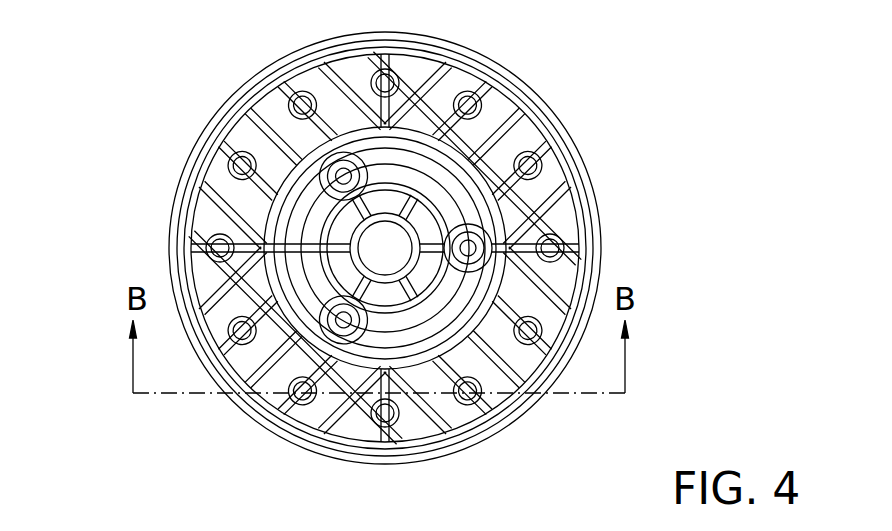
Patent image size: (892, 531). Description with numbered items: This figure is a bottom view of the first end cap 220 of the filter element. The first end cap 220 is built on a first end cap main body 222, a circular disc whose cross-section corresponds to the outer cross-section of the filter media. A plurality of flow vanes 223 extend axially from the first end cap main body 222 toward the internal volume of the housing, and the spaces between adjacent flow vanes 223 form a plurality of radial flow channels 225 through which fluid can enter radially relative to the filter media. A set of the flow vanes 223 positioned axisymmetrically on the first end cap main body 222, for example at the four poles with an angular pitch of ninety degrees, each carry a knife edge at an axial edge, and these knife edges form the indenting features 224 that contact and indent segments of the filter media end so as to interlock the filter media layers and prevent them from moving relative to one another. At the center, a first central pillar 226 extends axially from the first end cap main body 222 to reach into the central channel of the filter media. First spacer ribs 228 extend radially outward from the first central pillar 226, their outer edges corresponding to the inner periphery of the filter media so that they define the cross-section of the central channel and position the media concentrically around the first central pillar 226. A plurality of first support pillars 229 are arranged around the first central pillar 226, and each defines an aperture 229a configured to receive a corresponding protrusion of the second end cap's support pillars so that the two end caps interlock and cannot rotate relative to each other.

The first end cap 220 is at (676, 118).
The first end cap main body 222 is at (558, 218).
The flow vanes 223 is at (452, 176).
The indenting features 224 is at (393, 82).
The radial flow channels 225 is at (315, 90).
The first central pillar 226 is at (347, 237).
The first spacer ribs 228 is at (475, 162).
The first support pillars 229 is at (262, 148).
The apertures 229a is at (288, 165).